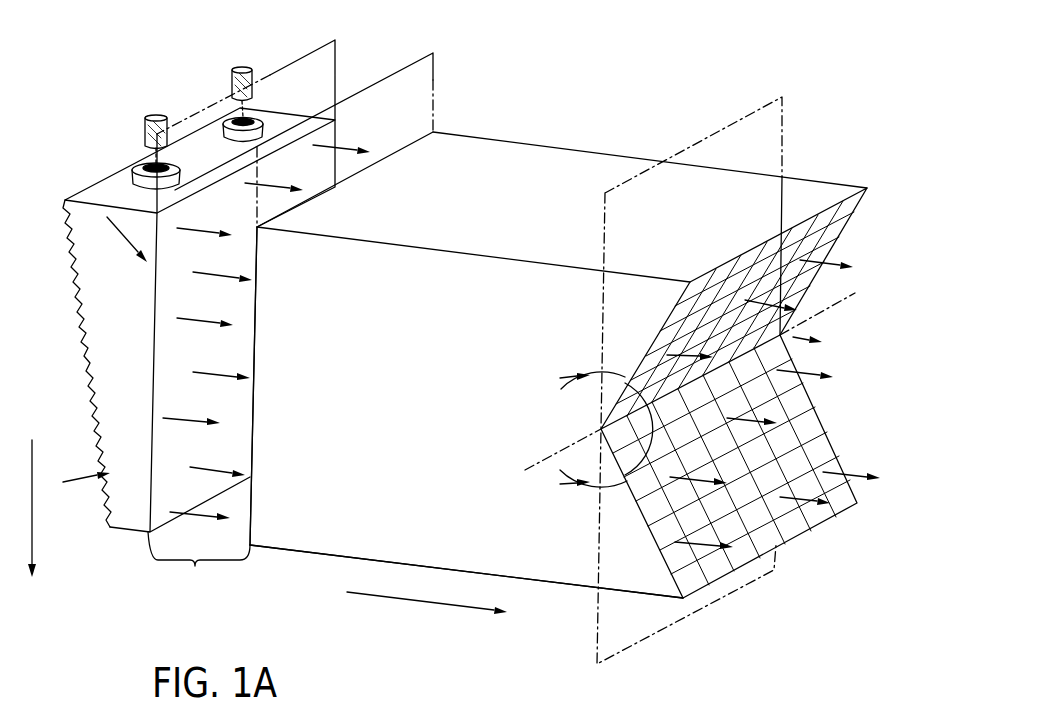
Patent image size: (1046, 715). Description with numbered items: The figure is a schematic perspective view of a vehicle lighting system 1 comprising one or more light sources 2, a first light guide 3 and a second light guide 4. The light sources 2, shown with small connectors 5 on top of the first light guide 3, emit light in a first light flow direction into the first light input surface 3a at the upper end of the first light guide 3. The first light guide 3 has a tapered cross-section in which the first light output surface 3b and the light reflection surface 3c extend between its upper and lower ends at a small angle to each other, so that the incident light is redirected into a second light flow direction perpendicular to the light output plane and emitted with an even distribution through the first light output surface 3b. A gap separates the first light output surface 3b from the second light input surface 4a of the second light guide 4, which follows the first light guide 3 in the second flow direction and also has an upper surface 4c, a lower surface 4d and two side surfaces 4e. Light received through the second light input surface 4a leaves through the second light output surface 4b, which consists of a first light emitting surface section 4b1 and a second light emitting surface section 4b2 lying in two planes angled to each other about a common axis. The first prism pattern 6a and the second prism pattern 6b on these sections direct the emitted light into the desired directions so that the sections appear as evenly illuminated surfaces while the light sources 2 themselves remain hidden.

The vehicle lighting system 1 is at (133, 43).
The light sources 2 is at (143, 135).
The first light guide 3 is at (72, 331).
The first light input surface 3a is at (103, 197).
The first light output surface 3b is at (172, 350).
The light reflection surface 3c is at (77, 302).
The second light guide 4 is at (823, 112).
The second light input surface 4a is at (403, 135).
The second light output surface 4b is at (756, 375).
The first light emitting surface section 4b1 is at (800, 235).
The second light emitting surface section 4b2 is at (803, 523).
The upper surface 4c is at (537, 193).
The lower surface 4d is at (333, 553).
The side surfaces 4e is at (297, 485).
The connector collar 5 is at (132, 180).
The first prism pattern 6a is at (790, 227).
The second prism pattern 6b is at (760, 525).